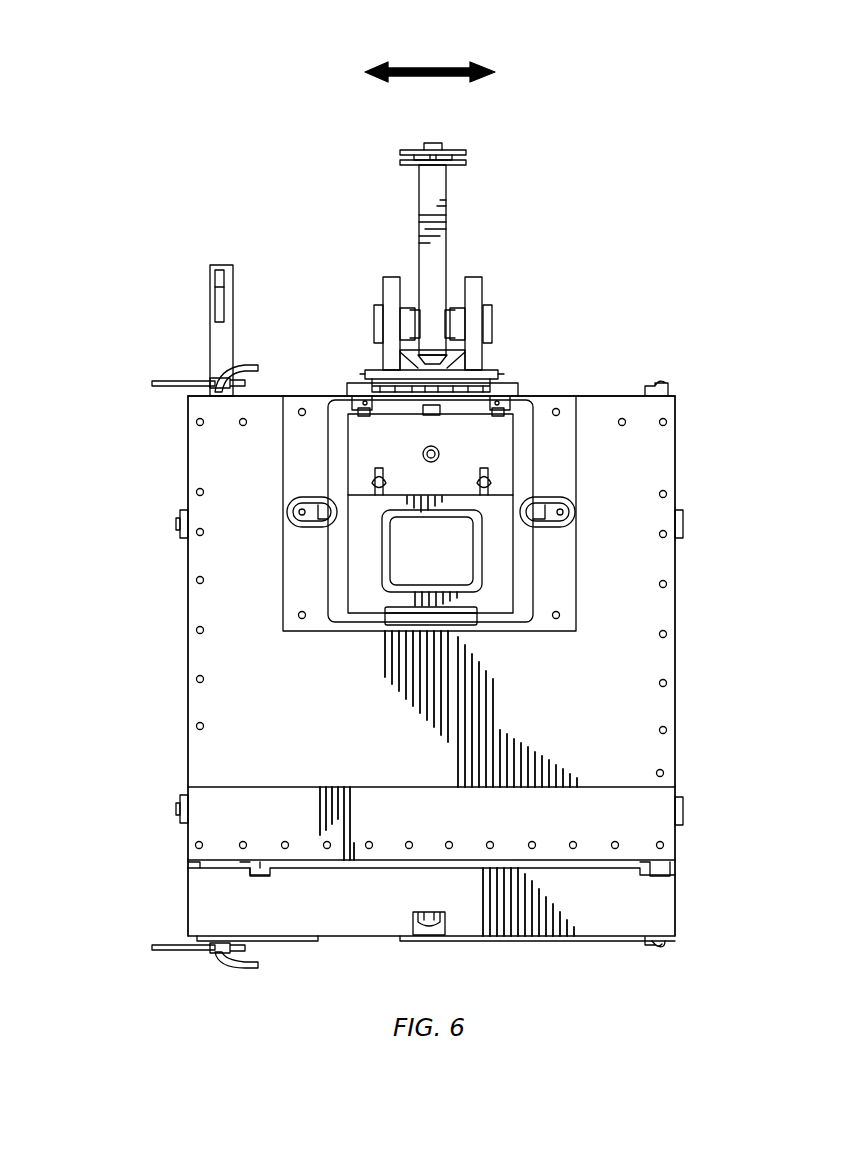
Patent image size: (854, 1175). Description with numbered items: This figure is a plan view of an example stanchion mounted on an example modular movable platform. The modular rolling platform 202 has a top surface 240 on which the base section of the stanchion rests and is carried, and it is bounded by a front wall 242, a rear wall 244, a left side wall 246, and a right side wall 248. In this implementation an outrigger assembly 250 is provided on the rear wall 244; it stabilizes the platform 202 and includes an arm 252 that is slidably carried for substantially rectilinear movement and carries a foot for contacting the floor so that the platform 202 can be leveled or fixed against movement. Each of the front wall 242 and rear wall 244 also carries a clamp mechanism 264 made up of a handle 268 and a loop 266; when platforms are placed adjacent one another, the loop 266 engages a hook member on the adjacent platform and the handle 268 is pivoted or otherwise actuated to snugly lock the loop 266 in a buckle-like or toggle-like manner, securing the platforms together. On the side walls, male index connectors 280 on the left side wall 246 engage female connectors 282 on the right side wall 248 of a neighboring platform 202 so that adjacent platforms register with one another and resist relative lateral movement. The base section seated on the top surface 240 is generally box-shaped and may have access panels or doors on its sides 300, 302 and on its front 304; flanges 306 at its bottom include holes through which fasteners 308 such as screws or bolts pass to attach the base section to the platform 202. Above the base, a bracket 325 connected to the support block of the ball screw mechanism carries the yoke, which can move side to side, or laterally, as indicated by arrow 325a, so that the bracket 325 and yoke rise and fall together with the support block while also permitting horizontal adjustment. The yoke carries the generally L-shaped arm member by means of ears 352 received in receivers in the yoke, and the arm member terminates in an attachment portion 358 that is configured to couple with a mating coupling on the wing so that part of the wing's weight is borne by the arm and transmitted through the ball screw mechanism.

The modular rolling platform 202 is at (140, 699).
The top surface 240 is at (299, 727).
The front wall 242 is at (350, 937).
The rear wall 244 is at (632, 395).
The left side wall 246 is at (188, 604).
The right side wall 248 is at (676, 654).
The outrigger assembly 250 is at (188, 328).
The arm 252 is at (233, 327).
The clamp mechanism 264 is at (128, 386).
The loop 266 is at (165, 386).
The handle 268 is at (258, 368).
The male index mechanism connector 280 is at (176, 522).
The female connector 282 is at (683, 522).
The side of base section 300 is at (355, 440).
The side of base section 302 is at (513, 440).
The front of base section 304 is at (500, 618).
The flange 306 is at (566, 471).
The fastener 308 is at (575, 514).
The bracket 325 is at (490, 370).
The arrow 325a is at (436, 68).
The ear 352 is at (375, 322).
The attachment portion 358 is at (455, 150).